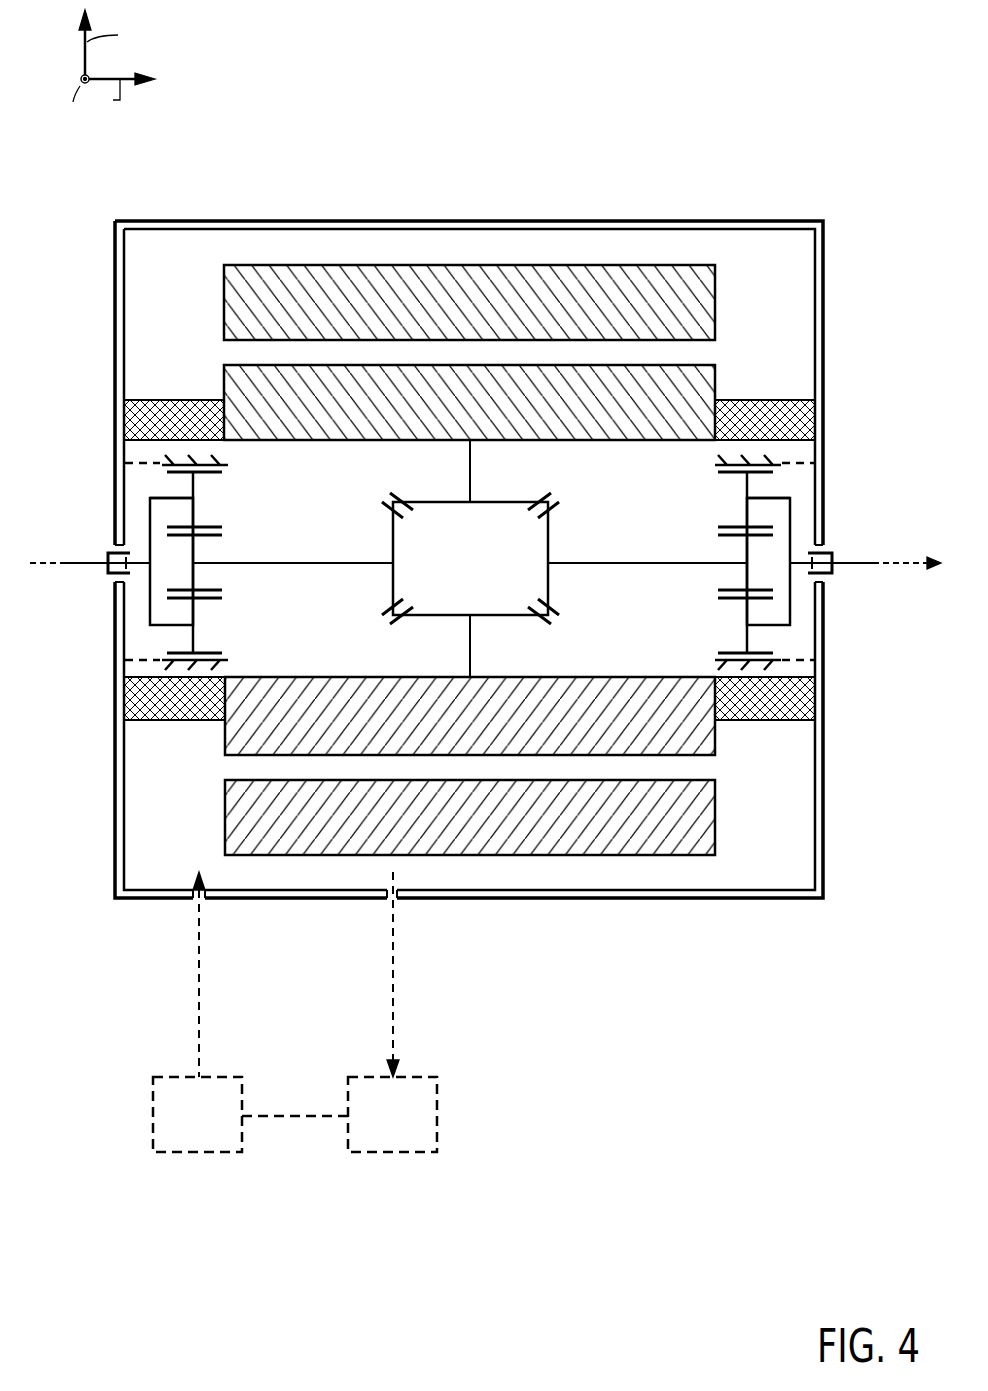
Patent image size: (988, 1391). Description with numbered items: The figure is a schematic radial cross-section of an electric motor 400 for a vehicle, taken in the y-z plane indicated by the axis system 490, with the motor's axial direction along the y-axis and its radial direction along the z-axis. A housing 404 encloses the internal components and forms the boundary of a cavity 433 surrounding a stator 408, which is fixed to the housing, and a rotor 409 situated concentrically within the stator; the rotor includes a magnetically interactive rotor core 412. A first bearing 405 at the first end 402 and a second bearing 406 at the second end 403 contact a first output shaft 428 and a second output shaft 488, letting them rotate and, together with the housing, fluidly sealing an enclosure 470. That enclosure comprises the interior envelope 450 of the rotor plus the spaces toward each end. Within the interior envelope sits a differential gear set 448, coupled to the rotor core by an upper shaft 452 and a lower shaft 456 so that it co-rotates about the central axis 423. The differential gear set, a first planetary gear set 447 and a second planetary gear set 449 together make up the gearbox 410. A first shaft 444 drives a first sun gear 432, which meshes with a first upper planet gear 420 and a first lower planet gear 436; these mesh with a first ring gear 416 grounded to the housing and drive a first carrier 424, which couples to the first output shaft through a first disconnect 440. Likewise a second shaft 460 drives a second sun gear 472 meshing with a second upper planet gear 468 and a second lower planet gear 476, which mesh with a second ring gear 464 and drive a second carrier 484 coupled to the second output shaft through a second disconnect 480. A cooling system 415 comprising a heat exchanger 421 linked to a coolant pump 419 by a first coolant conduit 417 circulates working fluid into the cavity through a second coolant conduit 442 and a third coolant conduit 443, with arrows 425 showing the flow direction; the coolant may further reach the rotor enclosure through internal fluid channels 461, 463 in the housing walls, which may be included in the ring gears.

The electric motor 400 is at (760, 120).
The axis system 490 is at (66, 42).
The first end 402 is at (90, 395).
The second end 403 is at (847, 390).
The housing 404 is at (371, 228).
The first bearing 405 is at (124, 688).
The second bearing 406 is at (823, 688).
The stator 408 is at (522, 248).
The rotor 409 is at (448, 314).
The gearbox 410 is at (575, 664).
The rotor core 412 is at (717, 366).
The cooling system 415 is at (294, 1053).
The first ring gear 416 is at (232, 465).
The first coolant conduit 417 is at (286, 1118).
The coolant pump 419 is at (153, 1098).
The first upper planet gear 420 is at (195, 485).
The heat exchanger 421 is at (437, 1108).
The central axis 423 is at (30, 572).
The first carrier 424 is at (182, 498).
The arrows 425 is at (390, 973).
The first output shaft 428 is at (93, 560).
The first sun gear 432 is at (200, 576).
The cavity 433 is at (690, 884).
The first lower planet gear 436 is at (200, 639).
The first disconnect 440 is at (140, 565).
The second coolant conduit 442 is at (197, 900).
The third coolant conduit 443 is at (391, 900).
The first shaft 444 is at (355, 561).
The first planetary gear set 447 is at (205, 558).
The differential gear set 448 is at (455, 561).
The second planetary gear set 449 is at (750, 559).
The interior envelope 450 is at (696, 430).
The upper shaft 452 is at (470, 470).
The lower shaft 456 is at (470, 655).
The second shaft 460 is at (566, 562).
The internal fluid channel 461 is at (125, 463).
The internal fluid channel 463 is at (815, 463).
The second ring gear 464 is at (717, 463).
The second upper planet gear 468 is at (745, 490).
The enclosure 470 is at (384, 668).
The second sun gear 472 is at (745, 553).
The second lower planet gear 476 is at (745, 618).
The second disconnect 480 is at (795, 565).
The second carrier 484 is at (765, 498).
The second output shaft 488 is at (848, 561).